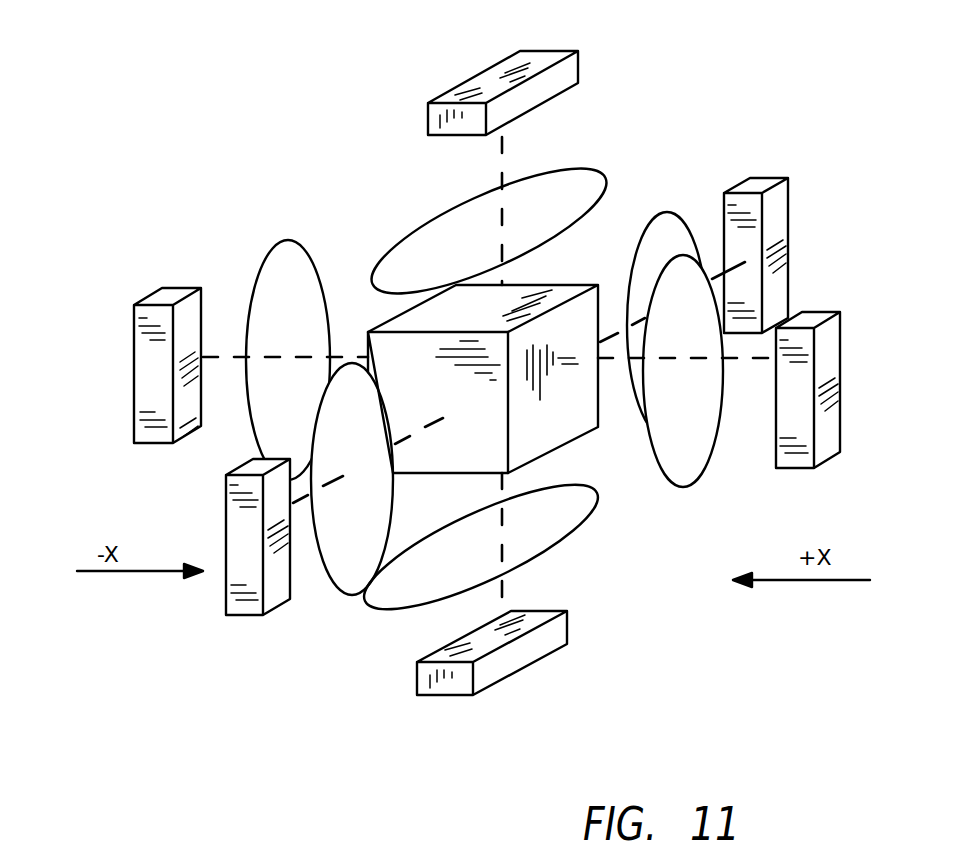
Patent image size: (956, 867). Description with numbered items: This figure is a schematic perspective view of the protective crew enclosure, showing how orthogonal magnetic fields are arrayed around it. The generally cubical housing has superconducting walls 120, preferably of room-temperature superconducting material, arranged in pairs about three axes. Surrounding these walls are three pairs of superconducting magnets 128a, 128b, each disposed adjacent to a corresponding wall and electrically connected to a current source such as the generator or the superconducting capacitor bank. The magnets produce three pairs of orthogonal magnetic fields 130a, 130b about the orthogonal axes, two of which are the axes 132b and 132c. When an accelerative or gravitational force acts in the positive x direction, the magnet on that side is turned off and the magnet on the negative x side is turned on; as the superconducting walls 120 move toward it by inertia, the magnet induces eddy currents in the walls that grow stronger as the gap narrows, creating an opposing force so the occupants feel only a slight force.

The superconducting walls 120 is at (534, 293).
The superconducting magnet 128a is at (147, 373).
The superconducting magnet 128b is at (782, 200).
The orthogonal magnetic field 130a is at (287, 278).
The orthogonal magnetic field 130b is at (653, 235).
The orthogonal axis 132b is at (725, 360).
The orthogonal axis 132c is at (500, 174).